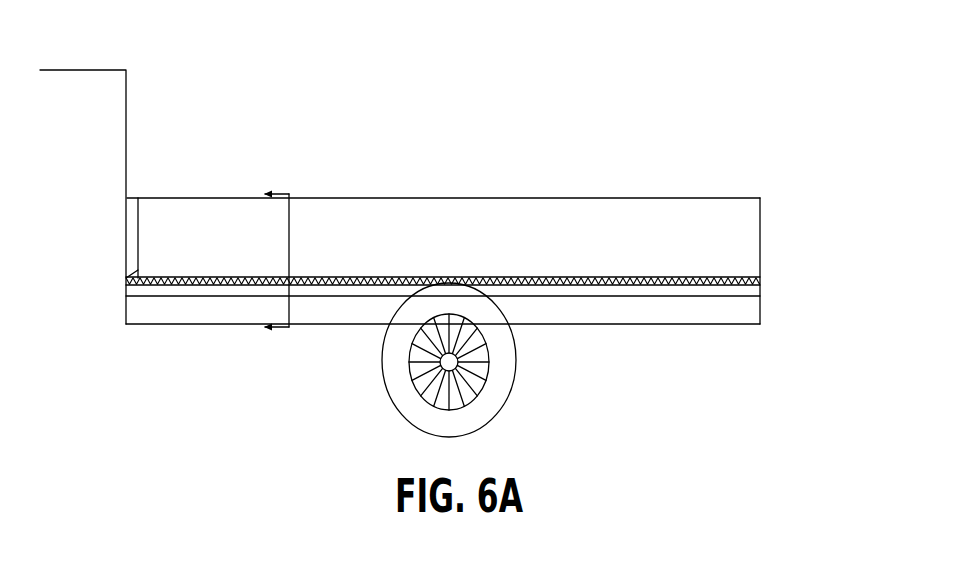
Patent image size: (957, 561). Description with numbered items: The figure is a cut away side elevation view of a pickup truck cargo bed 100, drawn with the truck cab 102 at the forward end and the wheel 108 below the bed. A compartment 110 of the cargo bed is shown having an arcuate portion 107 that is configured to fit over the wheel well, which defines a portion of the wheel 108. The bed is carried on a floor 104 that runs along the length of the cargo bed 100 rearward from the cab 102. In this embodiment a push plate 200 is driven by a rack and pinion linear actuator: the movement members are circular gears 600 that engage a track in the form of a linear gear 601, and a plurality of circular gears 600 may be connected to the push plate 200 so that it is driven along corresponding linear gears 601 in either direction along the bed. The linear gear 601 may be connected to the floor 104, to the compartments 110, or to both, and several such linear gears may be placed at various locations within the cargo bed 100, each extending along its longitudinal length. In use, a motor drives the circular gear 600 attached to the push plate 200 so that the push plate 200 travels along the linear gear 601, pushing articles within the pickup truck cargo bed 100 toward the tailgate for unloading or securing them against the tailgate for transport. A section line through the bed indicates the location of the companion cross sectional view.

The pickup truck cargo bed 100 is at (434, 225).
The cab 102 is at (129, 127).
The floor 104 is at (720, 296).
The arcuate portion 107 is at (474, 289).
The wheel 108 is at (479, 349).
The compartment 110 is at (720, 212).
The push plate 200 is at (131, 191).
The circular gear 600 is at (133, 266).
The linear gear 601 is at (183, 288).